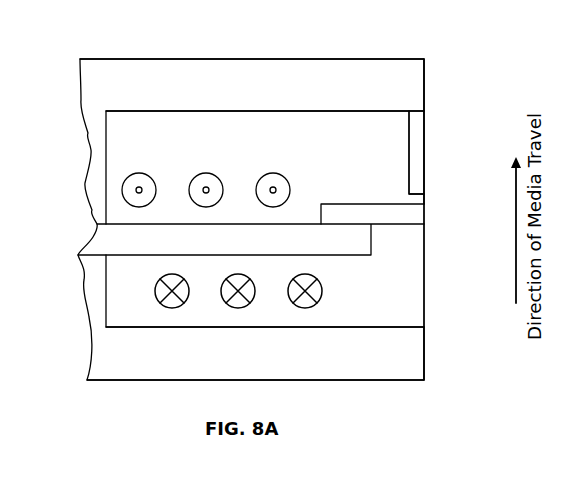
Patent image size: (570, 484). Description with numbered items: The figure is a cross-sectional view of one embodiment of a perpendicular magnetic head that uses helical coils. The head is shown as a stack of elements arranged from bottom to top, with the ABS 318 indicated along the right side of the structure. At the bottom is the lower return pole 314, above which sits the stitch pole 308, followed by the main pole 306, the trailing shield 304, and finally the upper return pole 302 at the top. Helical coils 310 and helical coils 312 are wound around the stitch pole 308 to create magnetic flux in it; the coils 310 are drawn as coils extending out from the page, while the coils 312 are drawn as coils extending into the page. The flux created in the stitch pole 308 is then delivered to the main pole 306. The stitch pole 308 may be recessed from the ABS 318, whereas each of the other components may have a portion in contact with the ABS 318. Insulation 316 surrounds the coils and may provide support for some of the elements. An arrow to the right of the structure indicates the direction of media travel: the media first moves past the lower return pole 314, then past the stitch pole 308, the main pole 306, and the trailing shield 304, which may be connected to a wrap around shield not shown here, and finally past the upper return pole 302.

The upper return pole 302 is at (252, 85).
The trailing shield 304 is at (425, 157).
The main pole 306 is at (425, 212).
The stitch pole 308 is at (251, 239).
The helical coils (extending out from the page) 310 is at (137, 173).
The helical coils (extending into the page) 312 is at (156, 297).
The lower return pole 314 is at (255, 353).
The insulation 316 is at (265, 219).
The ABS 318 is at (432, 78).